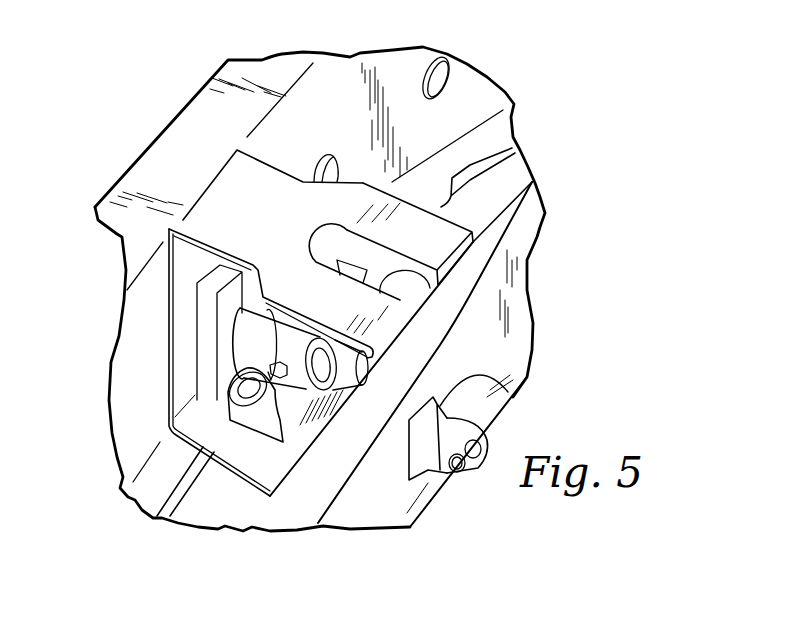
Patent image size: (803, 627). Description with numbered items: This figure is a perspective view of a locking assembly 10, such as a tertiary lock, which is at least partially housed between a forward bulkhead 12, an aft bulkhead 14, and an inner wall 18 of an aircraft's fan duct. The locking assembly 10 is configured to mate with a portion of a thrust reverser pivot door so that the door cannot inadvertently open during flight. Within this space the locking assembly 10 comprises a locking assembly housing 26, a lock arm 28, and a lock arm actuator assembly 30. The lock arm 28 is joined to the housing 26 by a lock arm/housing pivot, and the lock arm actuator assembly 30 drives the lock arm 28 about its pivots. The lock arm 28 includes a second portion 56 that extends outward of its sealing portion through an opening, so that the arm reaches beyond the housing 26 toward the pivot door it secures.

The locking assembly 10 is at (318, 130).
The forward bulkhead 12 is at (173, 150).
The aft bulkhead 14 is at (483, 277).
The inner wall 18 is at (225, 502).
The locking assembly housing 26 is at (353, 193).
The lock arm 28 is at (353, 370).
The lock arm actuator assembly 30 is at (240, 337).
The second portion 56 is at (440, 413).